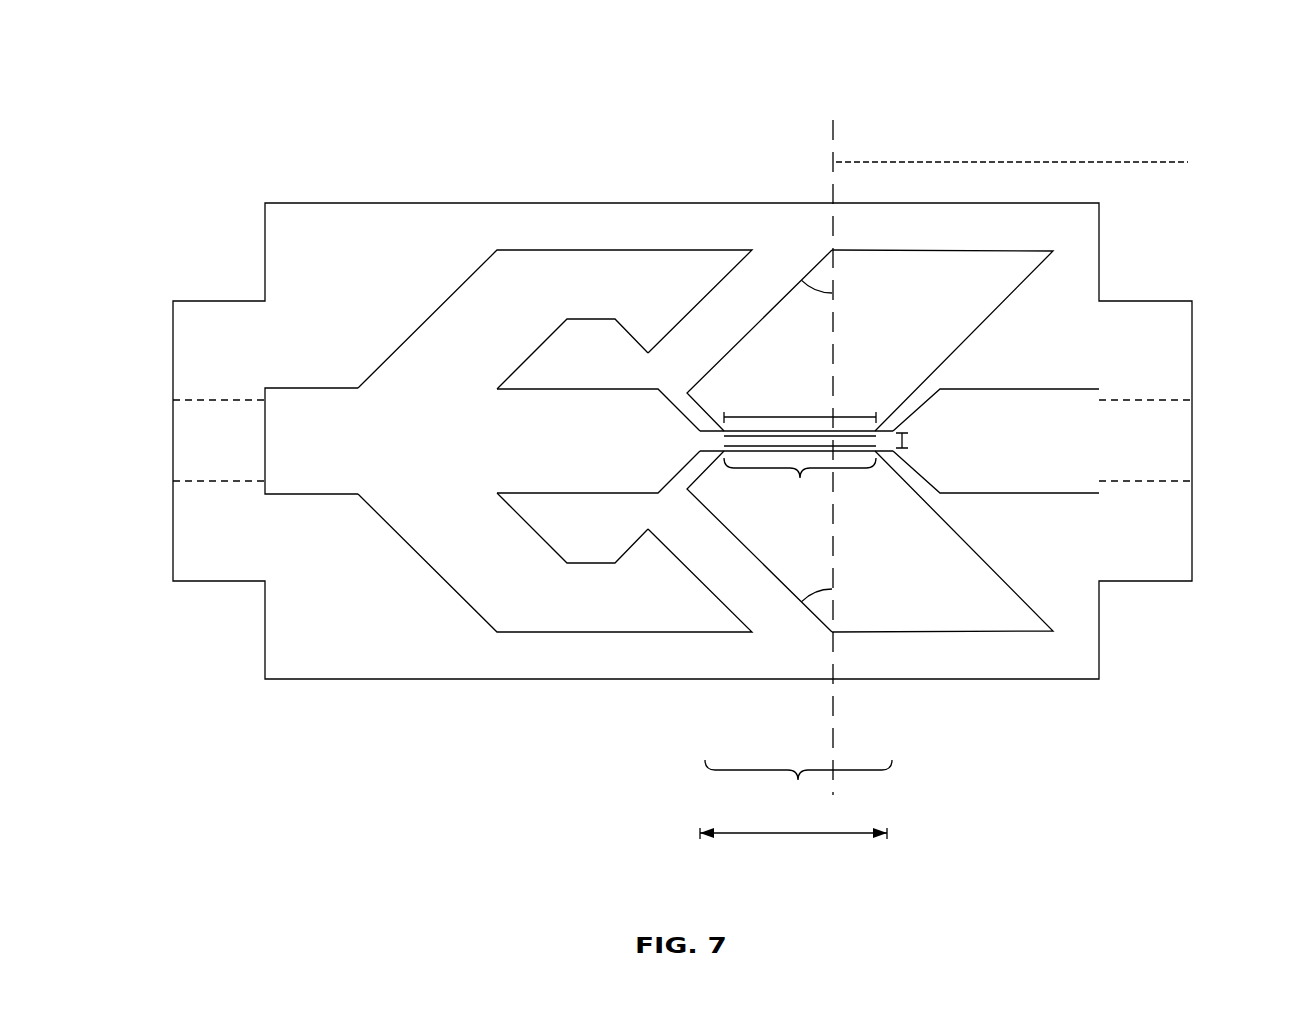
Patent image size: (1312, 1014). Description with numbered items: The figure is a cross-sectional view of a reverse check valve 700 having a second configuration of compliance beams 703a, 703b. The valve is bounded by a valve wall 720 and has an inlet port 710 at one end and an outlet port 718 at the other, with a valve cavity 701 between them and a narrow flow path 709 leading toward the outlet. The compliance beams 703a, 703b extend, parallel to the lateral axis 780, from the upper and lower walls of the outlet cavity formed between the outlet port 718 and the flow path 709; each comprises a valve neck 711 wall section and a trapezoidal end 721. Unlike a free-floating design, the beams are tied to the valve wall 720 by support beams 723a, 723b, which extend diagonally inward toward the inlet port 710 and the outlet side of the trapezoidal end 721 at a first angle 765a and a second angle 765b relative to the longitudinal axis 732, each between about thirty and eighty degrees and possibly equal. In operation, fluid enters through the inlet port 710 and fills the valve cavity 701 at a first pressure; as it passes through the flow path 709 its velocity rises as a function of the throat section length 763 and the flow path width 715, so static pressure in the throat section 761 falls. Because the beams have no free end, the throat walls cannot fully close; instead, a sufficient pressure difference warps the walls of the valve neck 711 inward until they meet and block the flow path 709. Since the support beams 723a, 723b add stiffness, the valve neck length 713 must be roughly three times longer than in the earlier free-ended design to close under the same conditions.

The reverse check valve 700 is at (1265, 58).
The valve cavity 701 is at (980, 282).
The compliance beam 703a is at (595, 310).
The compliance beam 703b is at (594, 574).
The flow path 709 is at (705, 441).
The inlet port 710 is at (190, 398).
The valve neck 711 is at (800, 485).
The valve neck length 713 is at (760, 416).
The flow path width 715 is at (906, 440).
The outlet port 718 is at (1178, 400).
The valve wall 720 is at (351, 203).
The trapezoidal end 721 is at (522, 363).
The support beam 723a is at (702, 336).
The support beam 723b is at (702, 546).
The longitudinal axis 732 is at (833, 444).
The throat section 761 is at (798, 783).
The throat section length 763 is at (788, 835).
The first angle 765a is at (814, 297).
The second angle 765b is at (830, 596).
The lateral axis 780 is at (1037, 162).